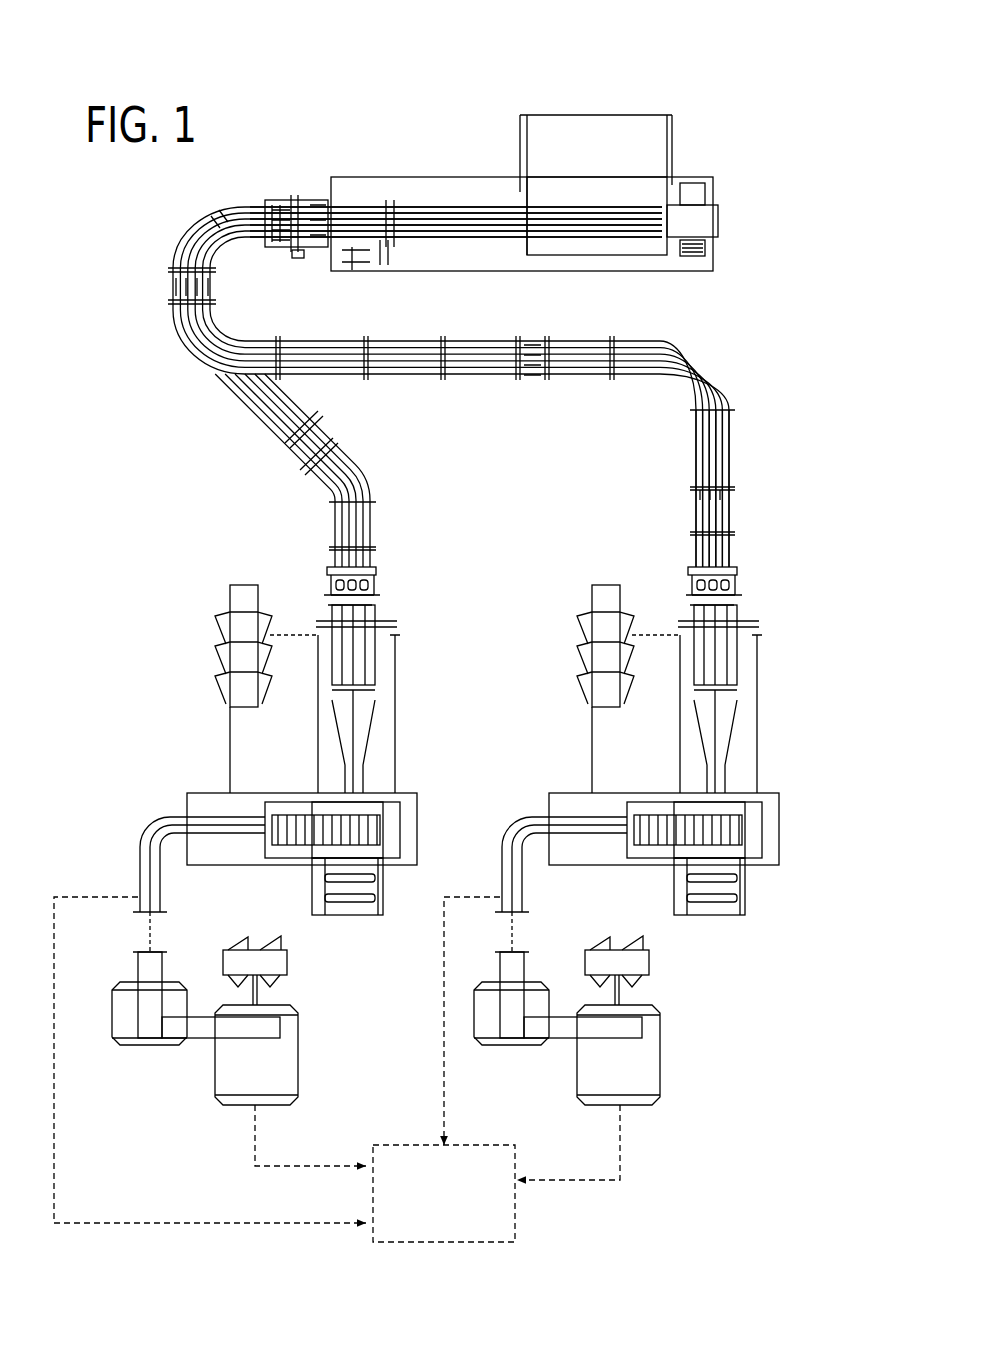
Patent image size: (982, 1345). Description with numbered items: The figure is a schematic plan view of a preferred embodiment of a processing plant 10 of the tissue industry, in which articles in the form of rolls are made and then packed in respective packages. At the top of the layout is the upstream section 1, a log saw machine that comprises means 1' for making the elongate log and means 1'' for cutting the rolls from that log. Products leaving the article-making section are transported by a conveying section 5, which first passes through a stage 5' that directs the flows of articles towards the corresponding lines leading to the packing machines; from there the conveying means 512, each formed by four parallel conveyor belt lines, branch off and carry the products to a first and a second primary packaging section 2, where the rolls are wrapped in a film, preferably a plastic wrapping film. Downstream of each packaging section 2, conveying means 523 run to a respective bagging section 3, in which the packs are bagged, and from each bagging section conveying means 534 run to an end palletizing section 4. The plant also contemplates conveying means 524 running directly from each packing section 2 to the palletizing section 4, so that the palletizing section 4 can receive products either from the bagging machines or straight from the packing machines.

The upstream section 1 is at (484, 173).
The means for making the log 1' is at (596, 132).
The means for cutting the rolls from the log 1'' is at (597, 147).
The stage for directing the flows of articles 5' is at (309, 167).
The conveying section 5 is at (401, 387).
The means for conveying the products 512 is at (238, 402).
The processing plant 10 is at (772, 323).
The primary packaging section 2 is at (215, 788).
The conveying means 523 is at (150, 933).
The conveying means 524 is at (193, 1222).
The conveying means 534 is at (322, 1163).
The bagging section 3 is at (225, 1078).
The palletizing section 4 is at (452, 1208).